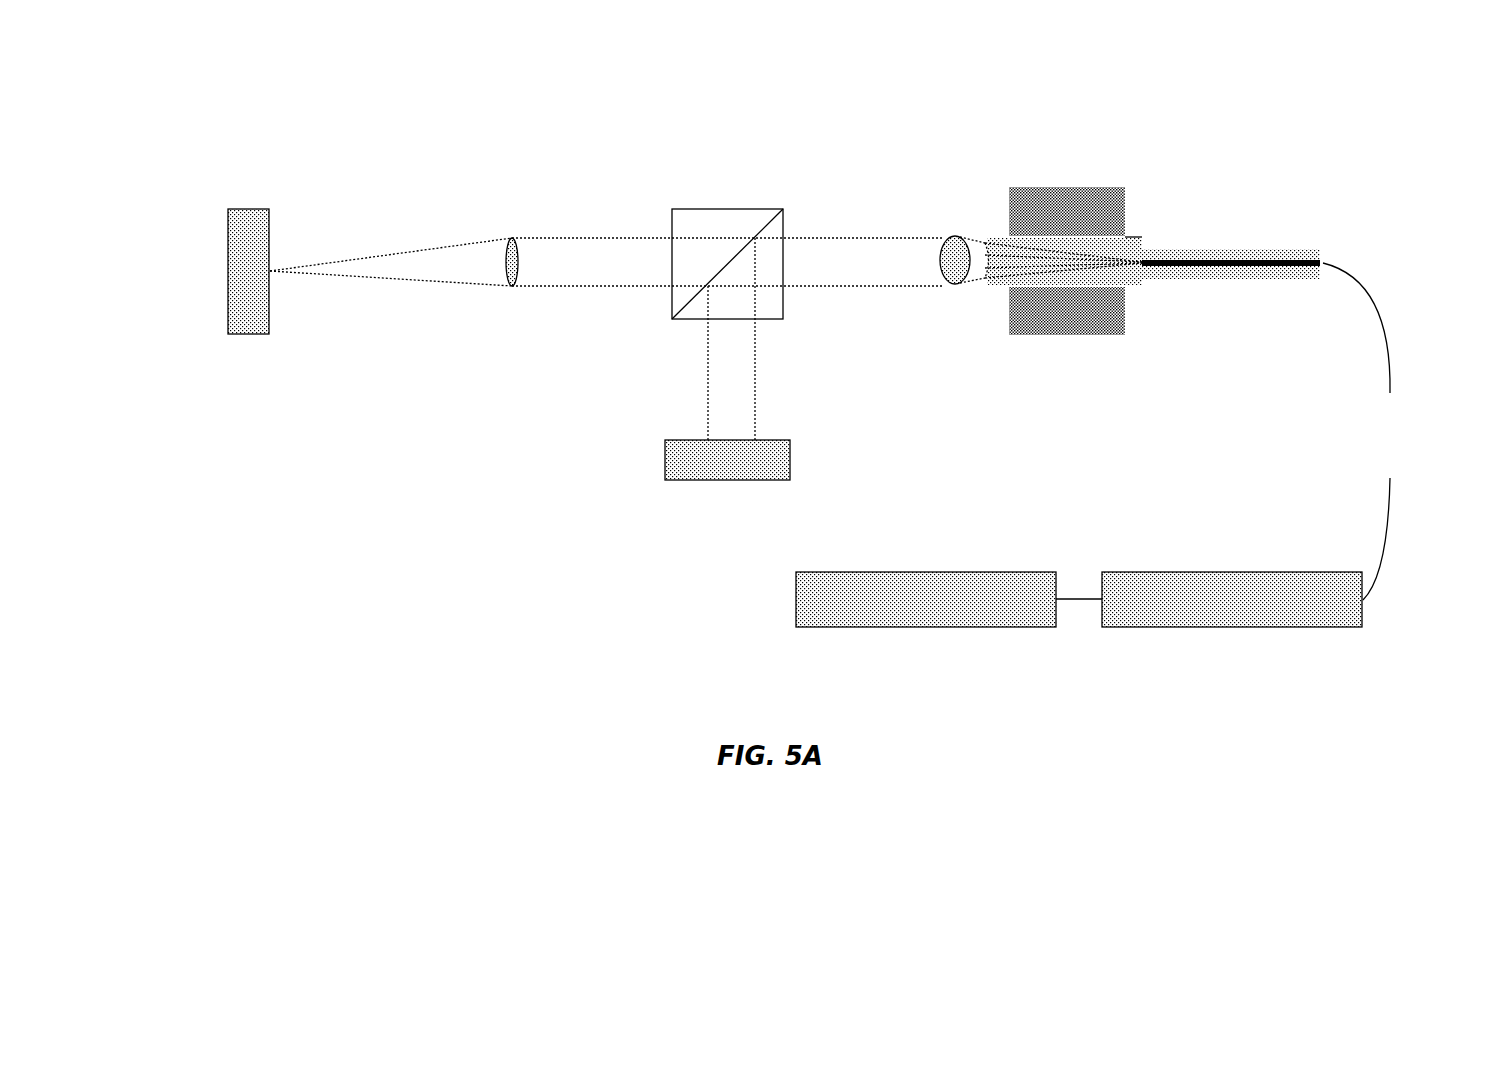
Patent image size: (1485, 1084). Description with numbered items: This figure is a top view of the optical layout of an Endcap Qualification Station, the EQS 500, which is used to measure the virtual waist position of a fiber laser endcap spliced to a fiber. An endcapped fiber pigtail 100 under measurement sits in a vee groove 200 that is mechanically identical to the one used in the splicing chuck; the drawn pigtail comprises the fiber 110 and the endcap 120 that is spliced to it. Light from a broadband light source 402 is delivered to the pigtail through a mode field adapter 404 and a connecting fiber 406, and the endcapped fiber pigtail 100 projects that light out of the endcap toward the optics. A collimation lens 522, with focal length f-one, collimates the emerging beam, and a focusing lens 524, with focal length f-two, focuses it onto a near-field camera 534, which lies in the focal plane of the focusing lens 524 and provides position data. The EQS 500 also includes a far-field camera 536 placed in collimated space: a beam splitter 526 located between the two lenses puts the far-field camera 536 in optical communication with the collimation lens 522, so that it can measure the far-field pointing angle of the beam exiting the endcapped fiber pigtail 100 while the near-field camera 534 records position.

The endcapped fiber pigtail 100 is at (1152, 199).
The LMA fiber 110 is at (1244, 248).
The endcap 120 is at (1129, 282).
The vee groove 200 is at (1065, 301).
The broadband light source 402 is at (926, 622).
The mode field adapter 404 is at (1232, 621).
The connecting fiber 406 is at (1396, 431).
The EQS 500 is at (236, 645).
The collimation lens 522 is at (954, 253).
The focusing lens 524 is at (513, 254).
The beam splitter 526 is at (757, 245).
The near-field camera 534 is at (238, 261).
The far-field camera 536 is at (792, 486).